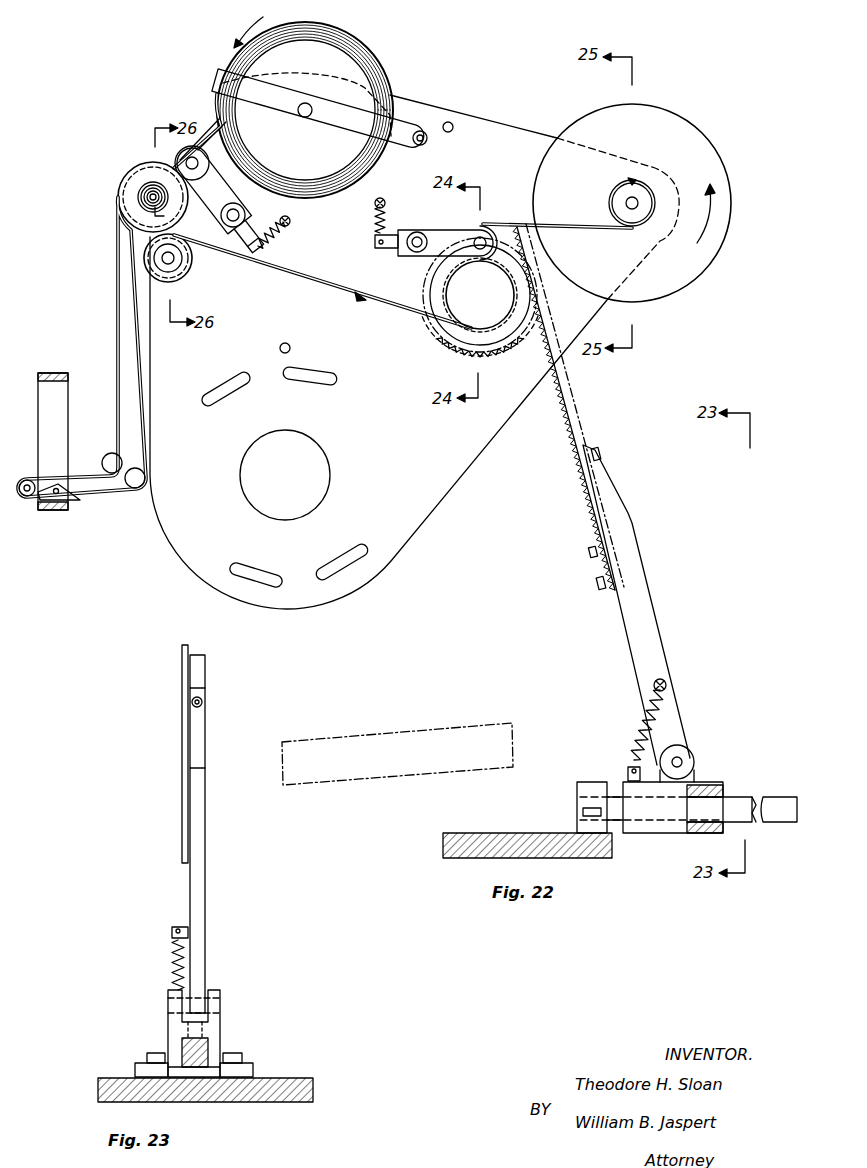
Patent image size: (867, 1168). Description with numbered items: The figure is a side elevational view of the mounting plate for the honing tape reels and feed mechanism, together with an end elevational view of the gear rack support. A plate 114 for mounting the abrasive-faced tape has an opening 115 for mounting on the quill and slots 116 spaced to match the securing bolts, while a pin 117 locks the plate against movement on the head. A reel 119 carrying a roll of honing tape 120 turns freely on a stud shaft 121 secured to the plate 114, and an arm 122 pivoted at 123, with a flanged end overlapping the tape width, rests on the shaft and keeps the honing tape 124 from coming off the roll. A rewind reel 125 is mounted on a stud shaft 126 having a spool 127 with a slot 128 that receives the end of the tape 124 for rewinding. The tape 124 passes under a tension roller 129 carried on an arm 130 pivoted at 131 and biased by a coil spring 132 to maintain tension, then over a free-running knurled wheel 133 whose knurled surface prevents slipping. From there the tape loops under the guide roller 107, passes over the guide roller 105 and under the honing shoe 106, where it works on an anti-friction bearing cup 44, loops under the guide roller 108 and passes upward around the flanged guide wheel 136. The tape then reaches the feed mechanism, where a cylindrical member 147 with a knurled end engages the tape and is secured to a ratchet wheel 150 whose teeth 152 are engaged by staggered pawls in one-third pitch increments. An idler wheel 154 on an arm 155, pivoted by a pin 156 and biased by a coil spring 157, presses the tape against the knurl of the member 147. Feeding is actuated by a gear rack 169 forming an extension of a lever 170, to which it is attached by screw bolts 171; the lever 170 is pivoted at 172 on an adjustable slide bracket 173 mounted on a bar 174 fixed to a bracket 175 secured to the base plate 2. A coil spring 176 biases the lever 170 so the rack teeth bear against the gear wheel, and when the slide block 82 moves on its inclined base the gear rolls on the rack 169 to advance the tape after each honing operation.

In FIG. 22, the base plate 2 is at (462, 833).
In FIG. 23, the base plate 2 is at (283, 1078).
In FIG. 22, the anti-friction bearing cup 44 is at (72, 394).
In FIG. 22, the slide block 82 is at (427, 732).
In FIG. 22, the guide roller 105 is at (25, 502).
In FIG. 22, the honing shoe 106 is at (77, 507).
In FIG. 22, the guide roller 107 is at (113, 450).
In FIG. 22, the guide roller 108 is at (137, 490).
In FIG. 22, the plate 114 is at (488, 445).
In FIG. 23, the plate 114 is at (180, 731).
In FIG. 22, the opening 115 is at (312, 446).
In FIG. 22, the slots 116 is at (318, 368).
In FIG. 22, the pin 117 is at (292, 344).
In FIG. 22, the reel 119 is at (390, 70).
In FIG. 22, the roll of honing tape 120 is at (360, 45).
In FIG. 22, the stud shaft 121 is at (305, 118).
In FIG. 22, the arm 122 is at (218, 68).
In FIG. 22, the pivot 123 is at (428, 130).
In FIG. 22, the honing tape 124 is at (328, 283).
In FIG. 22, the rewind reel 125 is at (723, 166).
In FIG. 22, the stud shaft 126 is at (623, 203).
In FIG. 22, the spool 127 is at (622, 187).
In FIG. 22, the slot 128 is at (648, 181).
In FIG. 22, the tension roller 129 is at (192, 144).
In FIG. 22, the arm 130 is at (210, 212).
In FIG. 22, the pivot 131 is at (244, 218).
In FIG. 22, the coil spring 132 is at (270, 240).
In FIG. 22, the knurled wheel 133 is at (133, 167).
In FIG. 22, the guide wheel 136 is at (190, 275).
In FIG. 22, the cylindrical member 147 is at (455, 286).
In FIG. 22, the ratchet wheel 150 is at (458, 346).
In FIG. 22, the teeth 152 is at (493, 355).
In FIG. 22, the idler wheel 154 is at (497, 218).
In FIG. 22, the arm 155 is at (462, 229).
In FIG. 22, the pin 156 is at (418, 231).
In FIG. 22, the coil spring 157 is at (374, 223).
In FIG. 22, the gear rack 169 is at (572, 407).
In FIG. 22, the lever 170 is at (652, 597).
In FIG. 23, the lever 170 is at (213, 891).
In FIG. 22, the screw bolts 171 is at (600, 588).
In FIG. 22, the pivot 172 is at (687, 753).
In FIG. 23, the pivot 172 is at (220, 1005).
In FIG. 22, the adjustable slide bracket 173 is at (658, 830).
In FIG. 22, the bar 174 is at (780, 794).
In FIG. 22, the bracket 175 is at (577, 793).
In FIG. 22, the coil spring 176 is at (643, 723).
In FIG. 23, the coil spring 176 is at (170, 952).